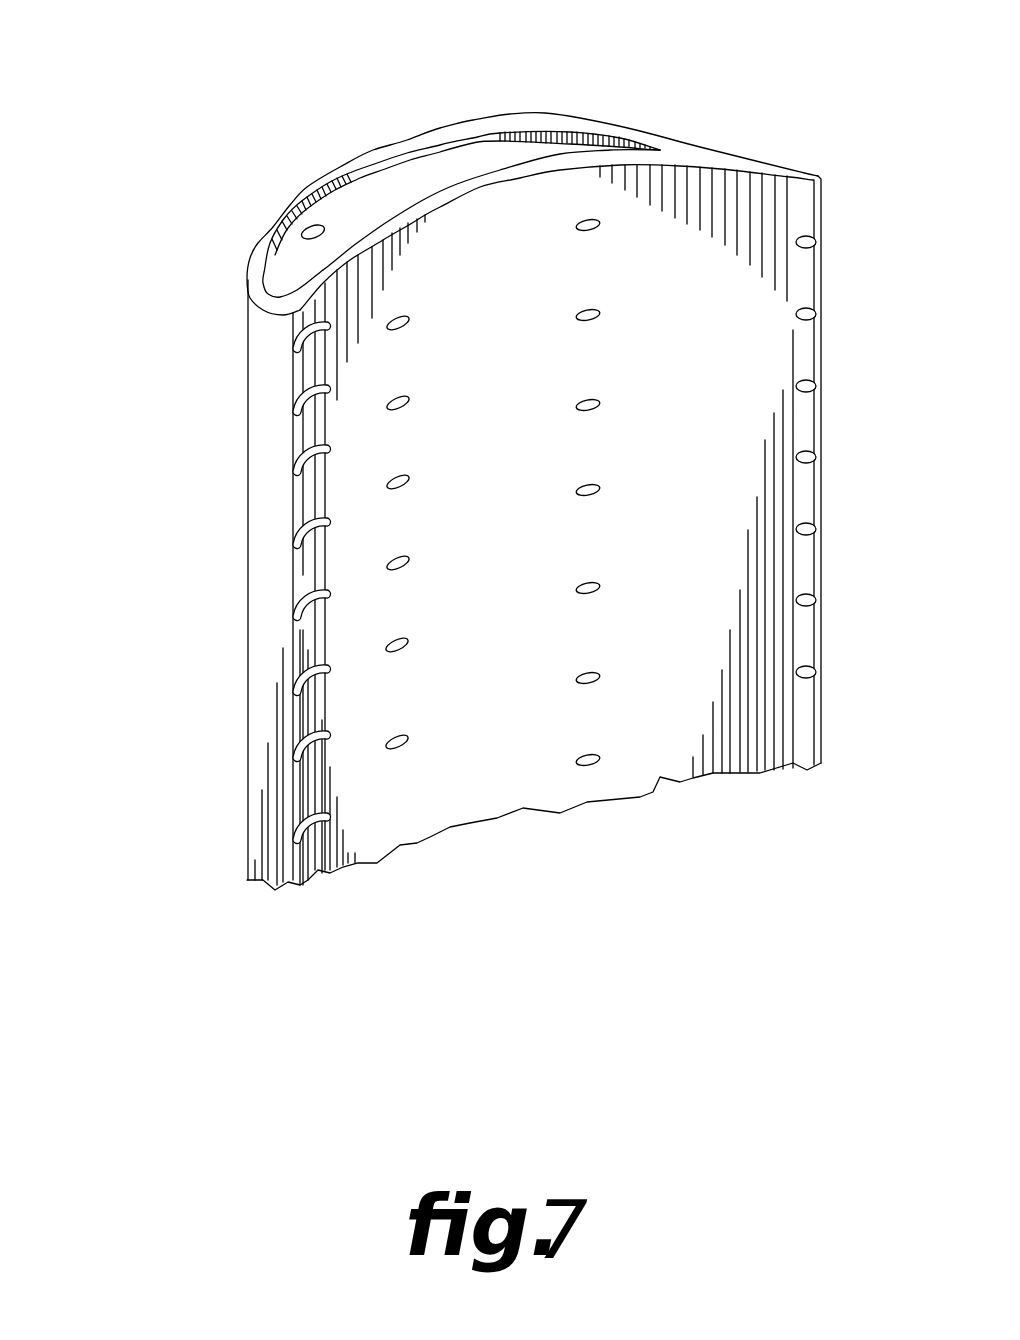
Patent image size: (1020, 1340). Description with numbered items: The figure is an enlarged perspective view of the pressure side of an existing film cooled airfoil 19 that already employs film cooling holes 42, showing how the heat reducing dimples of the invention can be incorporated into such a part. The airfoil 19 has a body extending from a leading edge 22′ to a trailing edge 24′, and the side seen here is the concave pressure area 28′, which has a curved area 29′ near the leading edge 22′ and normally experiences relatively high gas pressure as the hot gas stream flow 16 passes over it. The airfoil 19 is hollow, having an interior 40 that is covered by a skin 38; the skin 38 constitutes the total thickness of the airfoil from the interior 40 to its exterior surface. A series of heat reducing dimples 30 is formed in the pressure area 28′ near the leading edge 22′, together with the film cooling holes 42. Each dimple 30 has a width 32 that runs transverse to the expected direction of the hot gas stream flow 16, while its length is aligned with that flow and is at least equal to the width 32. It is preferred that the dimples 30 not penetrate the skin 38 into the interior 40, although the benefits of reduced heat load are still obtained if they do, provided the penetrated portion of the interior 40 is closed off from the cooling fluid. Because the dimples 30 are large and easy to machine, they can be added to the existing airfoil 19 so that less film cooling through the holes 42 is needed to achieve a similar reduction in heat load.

The hot gas stream flow 16 is at (207, 673).
The airfoil 19 is at (515, 449).
The leading edge 22′ is at (265, 505).
The trailing edge 24′ is at (820, 498).
The pressure area 28′ is at (590, 197).
The curved area 29′ is at (410, 297).
The heat reducing dimple 30 is at (293, 755).
The width 32 is at (403, 802).
The skin 38 is at (362, 160).
The interior 40 is at (405, 157).
The film cooling holes 42 is at (801, 676).